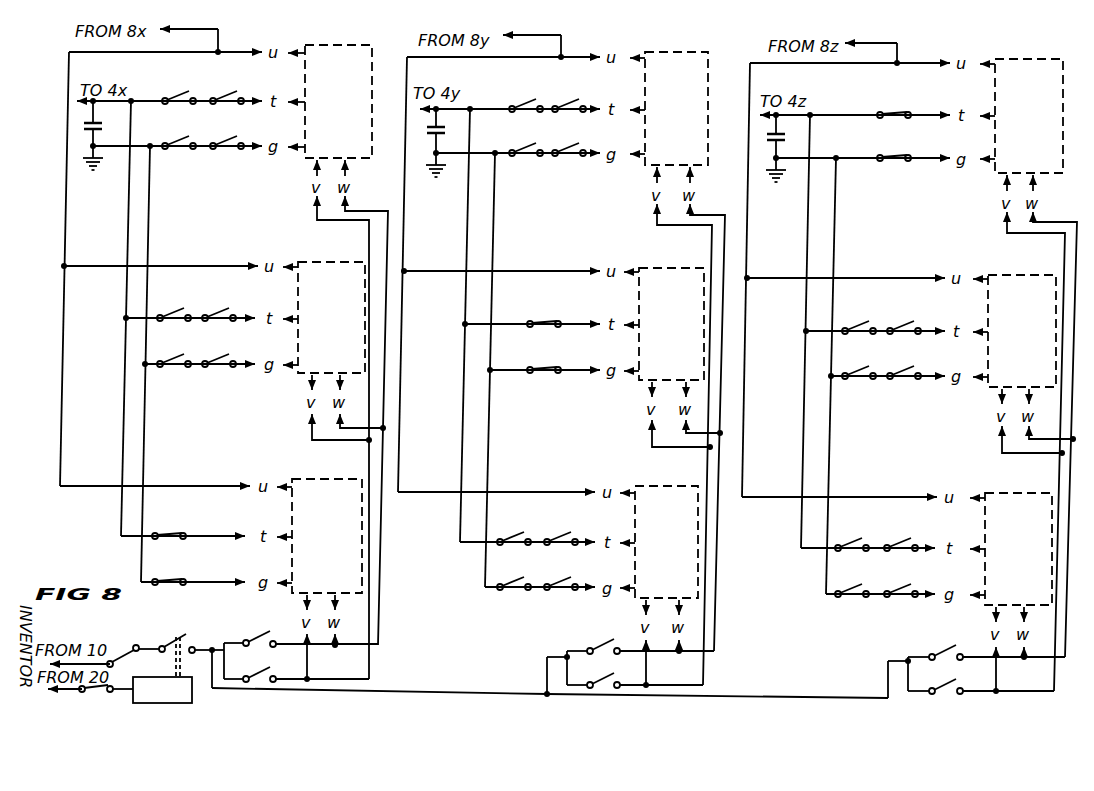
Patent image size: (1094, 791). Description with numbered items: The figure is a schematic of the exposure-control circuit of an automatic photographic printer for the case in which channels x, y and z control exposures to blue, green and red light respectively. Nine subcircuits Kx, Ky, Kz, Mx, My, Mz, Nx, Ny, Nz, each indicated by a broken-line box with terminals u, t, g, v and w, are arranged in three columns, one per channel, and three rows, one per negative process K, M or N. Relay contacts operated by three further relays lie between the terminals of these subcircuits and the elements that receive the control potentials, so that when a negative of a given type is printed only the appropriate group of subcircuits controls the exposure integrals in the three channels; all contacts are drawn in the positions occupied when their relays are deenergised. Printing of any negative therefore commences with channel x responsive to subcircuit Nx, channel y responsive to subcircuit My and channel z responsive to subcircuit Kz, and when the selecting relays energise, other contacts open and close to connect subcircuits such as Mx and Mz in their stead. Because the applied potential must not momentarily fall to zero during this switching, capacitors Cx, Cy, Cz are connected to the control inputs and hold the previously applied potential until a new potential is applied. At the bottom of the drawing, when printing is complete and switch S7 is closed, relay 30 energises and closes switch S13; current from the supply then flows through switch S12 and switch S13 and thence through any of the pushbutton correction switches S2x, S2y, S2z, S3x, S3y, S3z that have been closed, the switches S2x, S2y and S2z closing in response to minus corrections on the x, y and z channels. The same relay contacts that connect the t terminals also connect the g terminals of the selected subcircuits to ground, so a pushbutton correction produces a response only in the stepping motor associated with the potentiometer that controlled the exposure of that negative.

The relay 30 is at (193, 690).
The switch S7 is at (96, 697).
The switch S12 is at (131, 659).
The switch S13 is at (169, 635).
The switch S2x is at (250, 628).
The switch S3x is at (250, 668).
The switch S2y is at (593, 636).
The switch S3y is at (593, 672).
The switch S2z is at (935, 642).
The switch S3z is at (935, 678).
The subcircuit Kx is at (330, 101).
The subcircuit Ky is at (669, 108).
The subcircuit Kz is at (1021, 116).
The subcircuit Mx is at (324, 317).
The subcircuit My is at (664, 324).
The subcircuit Mz is at (1014, 331).
The subcircuit Nx is at (319, 536).
The subcircuit Ny is at (659, 542).
The subcircuit Nz is at (1011, 549).
The capacitor Cx is at (101, 135).
The capacitor Cy is at (444, 143).
The capacitor Cz is at (784, 148).